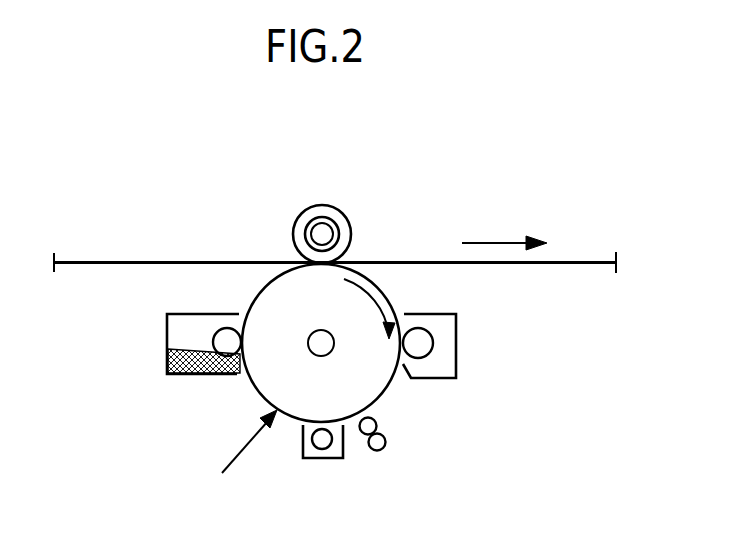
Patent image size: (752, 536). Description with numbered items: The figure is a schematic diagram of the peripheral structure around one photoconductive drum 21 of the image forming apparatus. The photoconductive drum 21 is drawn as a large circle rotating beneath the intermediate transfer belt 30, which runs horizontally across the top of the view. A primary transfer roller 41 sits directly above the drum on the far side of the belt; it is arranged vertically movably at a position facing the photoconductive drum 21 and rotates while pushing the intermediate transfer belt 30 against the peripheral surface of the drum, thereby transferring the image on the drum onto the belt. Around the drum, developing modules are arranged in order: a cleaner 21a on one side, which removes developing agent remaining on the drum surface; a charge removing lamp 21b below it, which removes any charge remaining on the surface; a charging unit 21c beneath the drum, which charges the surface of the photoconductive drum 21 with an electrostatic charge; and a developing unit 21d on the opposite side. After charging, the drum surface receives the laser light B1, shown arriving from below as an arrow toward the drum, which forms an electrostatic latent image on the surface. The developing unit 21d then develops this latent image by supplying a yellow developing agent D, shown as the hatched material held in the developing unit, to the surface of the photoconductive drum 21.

The photoconductive drum 21 is at (386, 393).
The cleaner 21a is at (456, 328).
The charge removing lamp 21b is at (384, 449).
The charging unit 21c is at (322, 459).
The developing unit 21d is at (167, 331).
The intermediate transfer belt 30 is at (172, 262).
The primary transfer roller 41 is at (322, 204).
The yellow developing agent D is at (167, 362).
The laser light B1 is at (243, 449).